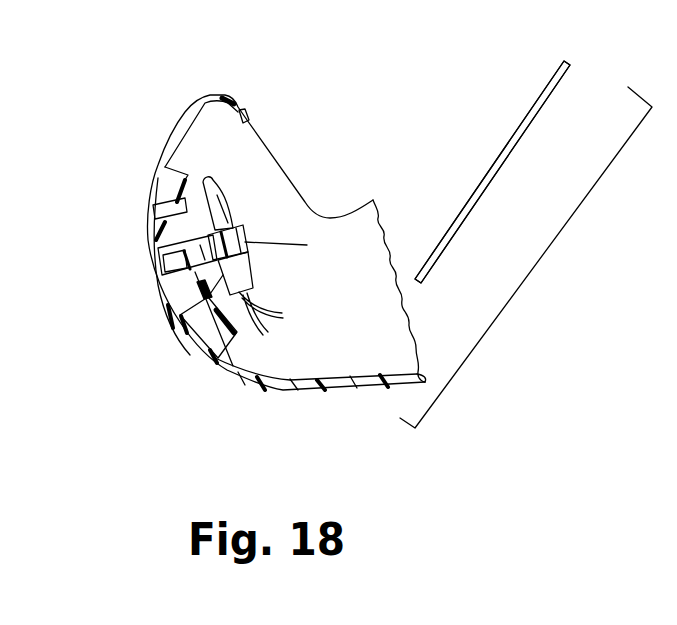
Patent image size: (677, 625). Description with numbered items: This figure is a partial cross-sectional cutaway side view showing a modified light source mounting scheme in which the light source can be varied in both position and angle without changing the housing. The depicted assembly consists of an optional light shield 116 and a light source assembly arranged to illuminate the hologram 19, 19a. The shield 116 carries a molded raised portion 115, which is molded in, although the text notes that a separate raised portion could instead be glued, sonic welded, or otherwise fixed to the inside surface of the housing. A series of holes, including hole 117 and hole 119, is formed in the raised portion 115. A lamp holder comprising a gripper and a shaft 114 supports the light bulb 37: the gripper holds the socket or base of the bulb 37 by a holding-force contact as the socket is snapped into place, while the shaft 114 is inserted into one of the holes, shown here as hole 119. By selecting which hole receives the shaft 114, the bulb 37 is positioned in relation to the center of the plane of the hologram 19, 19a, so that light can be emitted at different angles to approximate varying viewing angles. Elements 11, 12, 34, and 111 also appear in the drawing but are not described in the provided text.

The wall panel 11 is at (537, 257).
The shell 12 is at (182, 347).
The hologram 19 is at (510, 147).
The hologram 19a is at (492, 172).
The shell rim 34 is at (356, 388).
The light bulb 37 is at (222, 193).
The nozzle mounting assembly 111 is at (258, 236).
The lamp holder shaft 114 is at (170, 265).
The molded raised portion 115 is at (168, 185).
The shield 116 is at (183, 146).
The hole 117 is at (150, 213).
The hole 119 is at (173, 305).